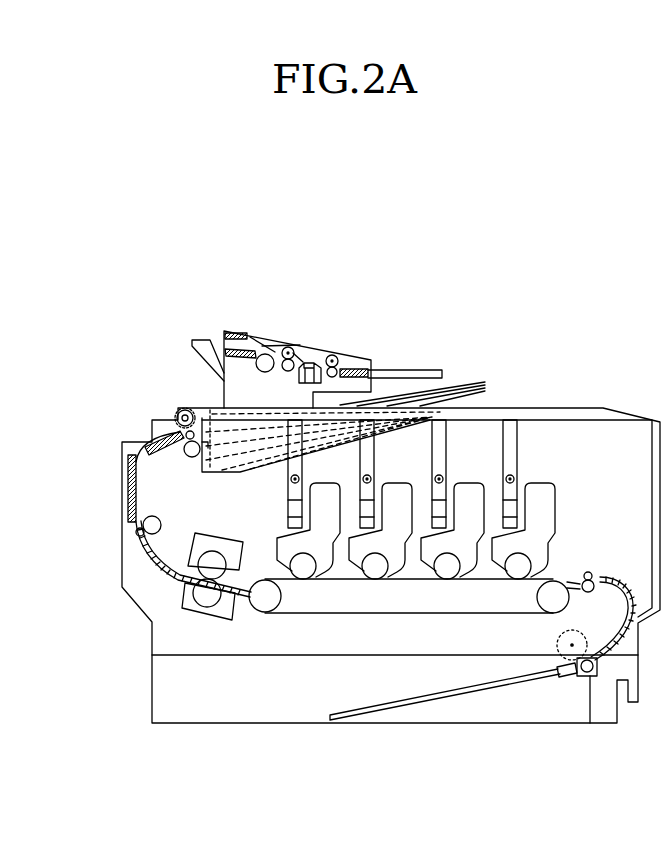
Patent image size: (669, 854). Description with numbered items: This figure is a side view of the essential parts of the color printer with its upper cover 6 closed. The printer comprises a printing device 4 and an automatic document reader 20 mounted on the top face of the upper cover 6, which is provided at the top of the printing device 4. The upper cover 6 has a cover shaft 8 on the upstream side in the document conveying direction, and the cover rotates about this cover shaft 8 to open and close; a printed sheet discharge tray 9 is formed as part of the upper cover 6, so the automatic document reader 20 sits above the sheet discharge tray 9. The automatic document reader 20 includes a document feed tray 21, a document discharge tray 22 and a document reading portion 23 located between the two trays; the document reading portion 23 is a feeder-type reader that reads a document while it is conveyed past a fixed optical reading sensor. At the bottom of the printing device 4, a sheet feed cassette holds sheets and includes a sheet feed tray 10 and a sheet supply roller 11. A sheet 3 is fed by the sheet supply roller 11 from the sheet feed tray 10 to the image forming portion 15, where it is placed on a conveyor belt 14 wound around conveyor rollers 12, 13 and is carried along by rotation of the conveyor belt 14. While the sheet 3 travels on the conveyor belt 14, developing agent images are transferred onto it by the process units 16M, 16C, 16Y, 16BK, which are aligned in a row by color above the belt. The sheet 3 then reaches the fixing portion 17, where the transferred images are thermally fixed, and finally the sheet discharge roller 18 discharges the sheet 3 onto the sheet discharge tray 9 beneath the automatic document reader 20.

The sheet 3 is at (452, 389).
The printing device 4 is at (115, 545).
The upper cover 6 is at (546, 411).
The cover shaft 8 is at (177, 422).
The sheet discharge tray 9 is at (268, 455).
The sheet feed tray 10 is at (468, 692).
The sheet supply roller 11 is at (585, 676).
The conveyor roller 12 is at (547, 603).
The conveyor roller 13 is at (264, 605).
The conveyor belt 14 is at (483, 587).
The image forming portion 15 is at (455, 499).
The process unit 16BK is at (322, 478).
The process unit 16Y is at (394, 481).
The process unit 16C is at (467, 481).
The process unit 16M is at (546, 481).
The fixing portion 17 is at (208, 617).
The sheet discharge roller 18 is at (186, 457).
The automatic document reader 20 is at (305, 342).
The document feed tray 21 is at (207, 339).
The document discharge tray 22 is at (400, 373).
The document reading portion 23 is at (300, 342).